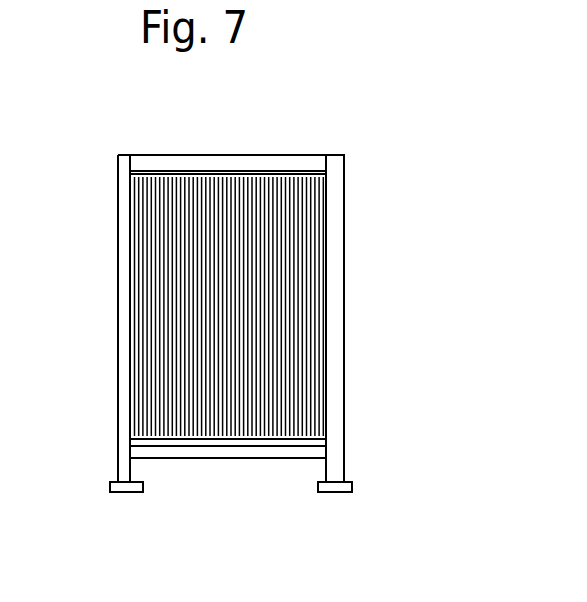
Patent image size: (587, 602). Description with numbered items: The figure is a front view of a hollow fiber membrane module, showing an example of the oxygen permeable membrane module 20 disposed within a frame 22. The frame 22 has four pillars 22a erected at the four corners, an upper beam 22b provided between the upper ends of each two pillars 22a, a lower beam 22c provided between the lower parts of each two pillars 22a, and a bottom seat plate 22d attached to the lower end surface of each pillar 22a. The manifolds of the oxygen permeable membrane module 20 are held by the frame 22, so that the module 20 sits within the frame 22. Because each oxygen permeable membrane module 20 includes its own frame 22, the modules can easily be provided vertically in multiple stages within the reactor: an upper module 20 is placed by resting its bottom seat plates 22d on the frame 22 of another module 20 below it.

The oxygen permeable membrane module 20 is at (305, 302).
The frame 22 is at (346, 232).
The pillar 22a is at (128, 332).
The upper beam 22b is at (255, 162).
The lower beam 22c is at (229, 450).
The bottom seat plate 22d is at (129, 492).